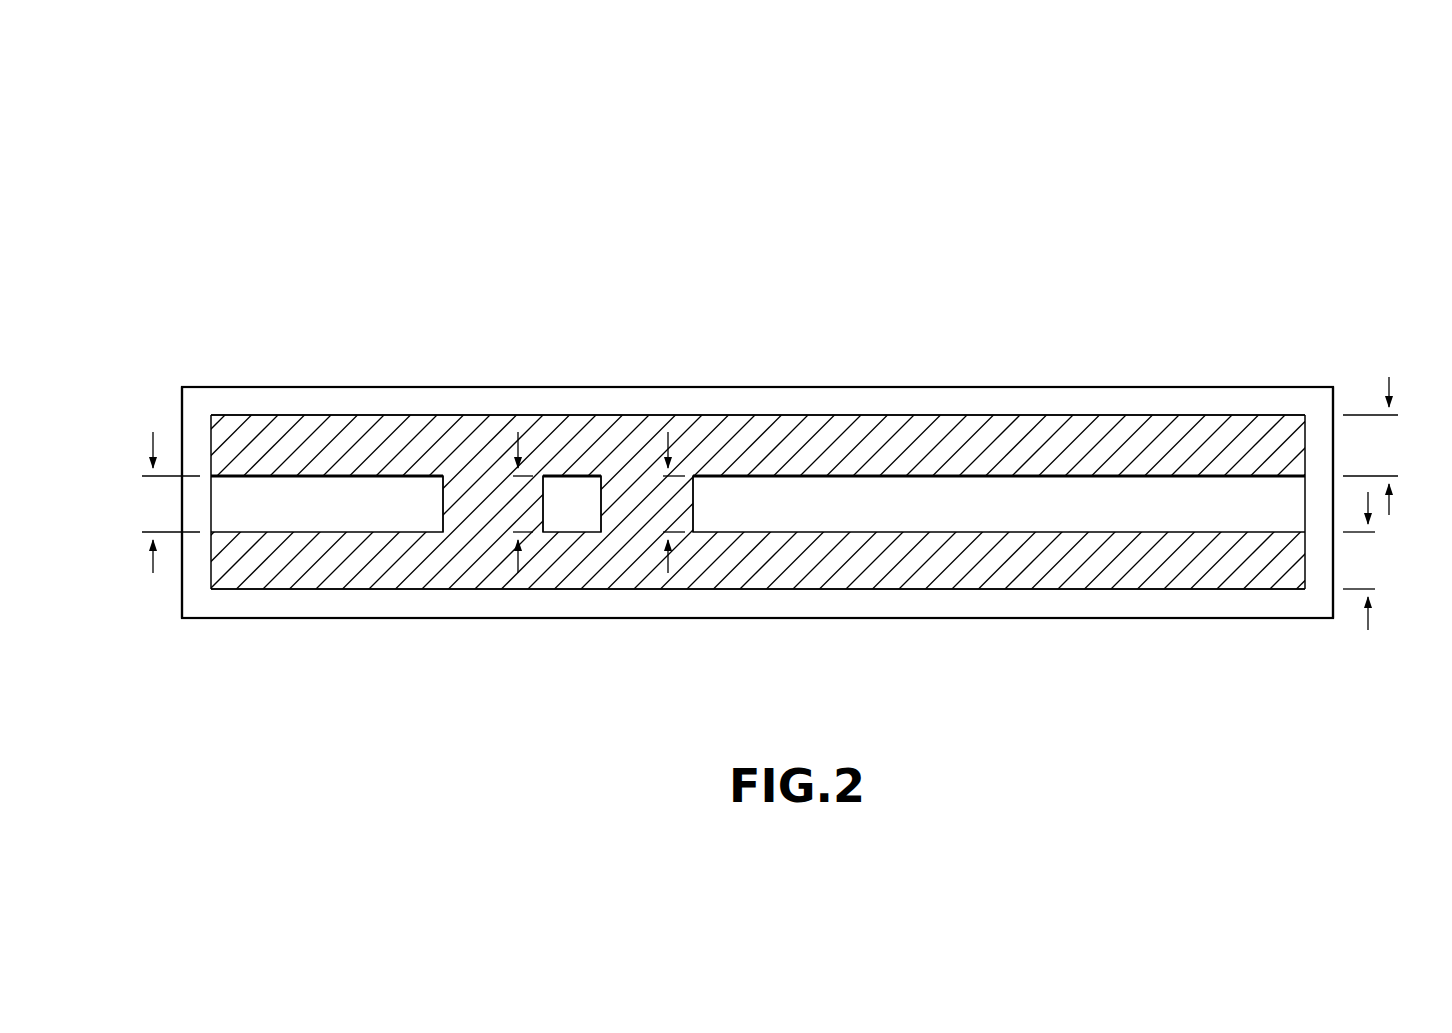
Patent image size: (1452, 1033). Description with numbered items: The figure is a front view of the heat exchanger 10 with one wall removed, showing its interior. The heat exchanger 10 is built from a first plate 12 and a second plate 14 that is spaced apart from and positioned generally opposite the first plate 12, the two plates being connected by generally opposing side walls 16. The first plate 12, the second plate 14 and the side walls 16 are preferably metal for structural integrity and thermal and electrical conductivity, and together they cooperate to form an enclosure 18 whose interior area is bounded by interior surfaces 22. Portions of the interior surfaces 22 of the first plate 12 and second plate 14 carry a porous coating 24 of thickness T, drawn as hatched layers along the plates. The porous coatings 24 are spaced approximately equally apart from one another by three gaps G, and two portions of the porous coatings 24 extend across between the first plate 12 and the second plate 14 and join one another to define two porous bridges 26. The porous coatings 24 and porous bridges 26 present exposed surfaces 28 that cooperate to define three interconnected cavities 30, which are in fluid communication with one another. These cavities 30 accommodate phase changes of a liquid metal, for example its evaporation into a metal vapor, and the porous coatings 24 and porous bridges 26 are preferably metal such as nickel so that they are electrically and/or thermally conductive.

The heat exchanger 10 is at (1308, 151).
The first plate 12 is at (1312, 404).
The second plate 14 is at (1293, 608).
The side walls 16 is at (190, 560).
The enclosure 18 is at (291, 374).
The interior surfaces 22 is at (847, 415).
The porous coating 24 is at (1215, 447).
The porous bridges 26 is at (477, 512).
The exposed surfaces 28 is at (229, 532).
The cavities 30 is at (380, 510).
The gap G is at (150, 505).
The thickness T is at (1388, 446).